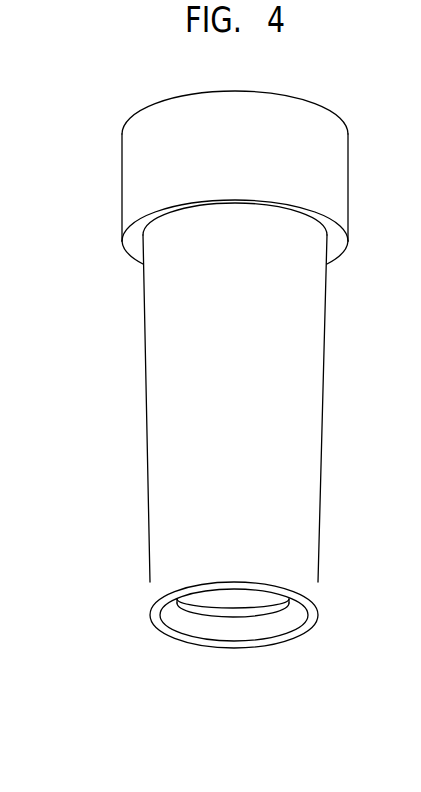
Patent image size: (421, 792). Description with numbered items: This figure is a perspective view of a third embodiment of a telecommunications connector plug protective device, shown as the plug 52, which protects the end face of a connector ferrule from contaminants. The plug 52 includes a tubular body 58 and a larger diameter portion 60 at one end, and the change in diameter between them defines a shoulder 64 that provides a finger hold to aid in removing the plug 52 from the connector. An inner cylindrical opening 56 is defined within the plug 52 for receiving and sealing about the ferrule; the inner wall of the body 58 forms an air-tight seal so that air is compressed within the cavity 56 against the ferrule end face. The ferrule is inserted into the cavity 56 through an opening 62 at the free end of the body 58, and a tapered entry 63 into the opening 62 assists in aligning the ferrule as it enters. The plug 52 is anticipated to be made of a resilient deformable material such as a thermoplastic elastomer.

The plug protective device 52 is at (216, 420).
The inner cylindrical opening 56 is at (222, 674).
The body 58 is at (263, 476).
The larger diameter portion 60 is at (233, 197).
The opening 62 is at (216, 624).
The tapered entry 63 is at (272, 623).
The shoulder 64 is at (130, 240).